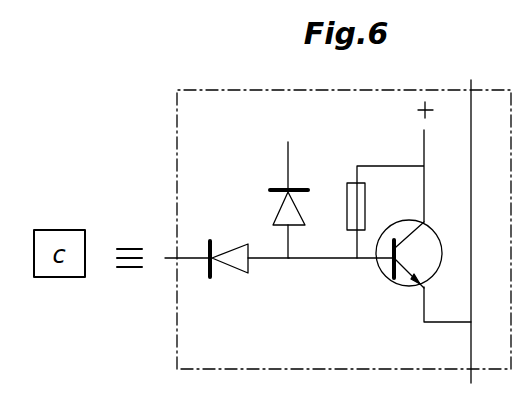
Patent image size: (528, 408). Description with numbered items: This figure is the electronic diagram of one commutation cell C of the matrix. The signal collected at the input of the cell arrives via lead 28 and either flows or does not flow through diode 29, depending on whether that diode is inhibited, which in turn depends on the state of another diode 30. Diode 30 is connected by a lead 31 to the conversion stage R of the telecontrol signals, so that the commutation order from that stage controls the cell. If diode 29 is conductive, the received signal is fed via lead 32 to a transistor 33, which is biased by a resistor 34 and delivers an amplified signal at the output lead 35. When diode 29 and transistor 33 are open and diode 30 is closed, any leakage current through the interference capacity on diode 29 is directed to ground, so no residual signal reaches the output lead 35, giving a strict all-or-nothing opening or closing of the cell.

The lead 28 is at (196, 258).
The diode 29 is at (237, 262).
The diode 30 is at (284, 210).
The lead 31 is at (289, 160).
The lead 32 is at (328, 258).
The transistor 33 is at (430, 232).
The resistor 34 is at (366, 200).
The output lead 35 is at (445, 322).